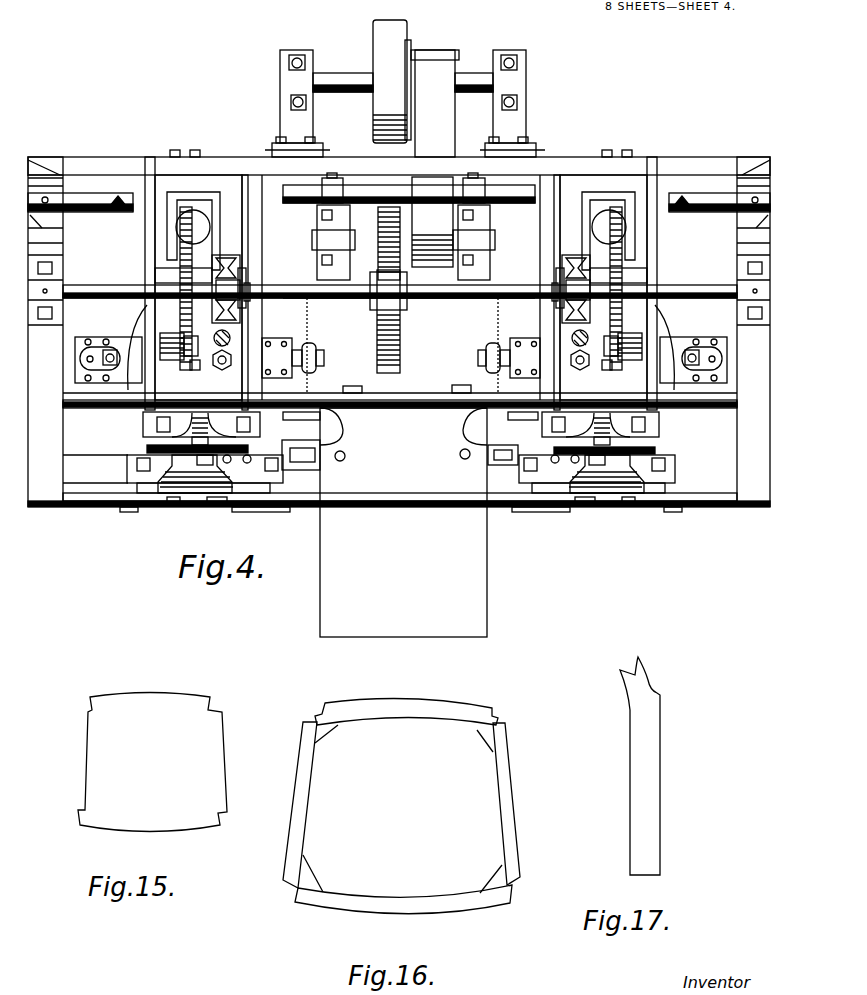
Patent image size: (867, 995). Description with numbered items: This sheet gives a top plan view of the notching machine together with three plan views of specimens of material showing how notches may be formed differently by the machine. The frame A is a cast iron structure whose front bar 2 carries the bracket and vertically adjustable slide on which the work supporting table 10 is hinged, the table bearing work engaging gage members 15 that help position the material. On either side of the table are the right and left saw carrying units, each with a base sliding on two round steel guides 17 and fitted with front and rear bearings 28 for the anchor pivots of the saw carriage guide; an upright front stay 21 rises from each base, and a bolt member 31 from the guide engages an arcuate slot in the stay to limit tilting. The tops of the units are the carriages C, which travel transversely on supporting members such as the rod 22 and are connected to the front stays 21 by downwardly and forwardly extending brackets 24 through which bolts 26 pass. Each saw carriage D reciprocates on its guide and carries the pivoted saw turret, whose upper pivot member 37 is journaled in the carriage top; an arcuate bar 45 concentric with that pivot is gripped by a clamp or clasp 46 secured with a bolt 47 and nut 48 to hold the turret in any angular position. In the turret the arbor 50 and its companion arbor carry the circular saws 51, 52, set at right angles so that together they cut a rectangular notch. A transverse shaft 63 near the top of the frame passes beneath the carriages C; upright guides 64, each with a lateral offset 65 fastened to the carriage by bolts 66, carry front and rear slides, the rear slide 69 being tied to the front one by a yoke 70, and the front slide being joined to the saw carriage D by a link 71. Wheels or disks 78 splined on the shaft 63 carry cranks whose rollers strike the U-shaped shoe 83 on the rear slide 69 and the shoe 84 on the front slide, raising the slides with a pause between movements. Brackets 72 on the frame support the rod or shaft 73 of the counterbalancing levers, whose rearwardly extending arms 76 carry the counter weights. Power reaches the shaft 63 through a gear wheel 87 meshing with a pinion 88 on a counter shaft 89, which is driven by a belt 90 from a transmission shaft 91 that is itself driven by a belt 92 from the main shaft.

The front bar 2 is at (307, 498).
The work supporting table 10 is at (403, 522).
The work engaging gage members 15 is at (355, 383).
The guides 17 is at (90, 482).
The upright front stay 21 is at (238, 497).
The rod 22 is at (400, 409).
The brackets 24 is at (193, 456).
The bolts 26 is at (210, 470).
The front and rear bearings 28 is at (165, 180).
The bolt member 31 is at (220, 500).
The pivot member 37 is at (220, 371).
The arcuate bar 45 is at (130, 330).
The clamp or clasp 46 is at (100, 390).
The bolt 47 is at (86, 360).
The nut 48 is at (738, 370).
The saw carrying shaft or arbor 50 is at (324, 357).
The circular saw 51 is at (290, 420).
The circular saw 52 is at (309, 333).
The shaft 63 is at (332, 300).
The upright guides 64 is at (241, 262).
The lateral offset 65 is at (248, 278).
The bolts 66 is at (256, 300).
The rear slide 69 is at (600, 262).
The cross bar or yoke 70 is at (605, 272).
The link 71 is at (232, 340).
The brackets 72 is at (48, 168).
The rod or shaft 73 is at (92, 196).
The rearwardly extending arms 76 is at (200, 265).
The wheels or disks 78 is at (185, 250).
The shoe 83 is at (170, 240).
The shoe 84 is at (192, 370).
The gear wheel 87 is at (401, 365).
The pinion 88 is at (378, 246).
The counter shaft 89 is at (470, 240).
The belt 90 is at (444, 152).
The transmission shaft 91 is at (348, 93).
The belt 92 is at (385, 40).
The frame A is at (752, 490).
The carriages C is at (150, 425).
The saw carriage D is at (165, 322).